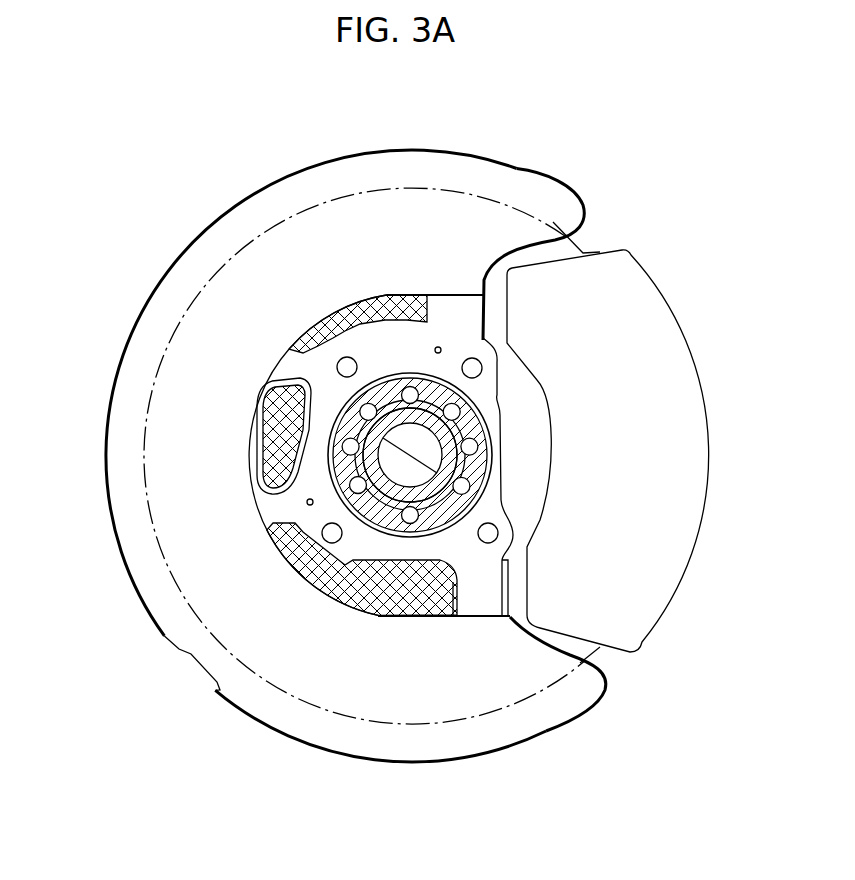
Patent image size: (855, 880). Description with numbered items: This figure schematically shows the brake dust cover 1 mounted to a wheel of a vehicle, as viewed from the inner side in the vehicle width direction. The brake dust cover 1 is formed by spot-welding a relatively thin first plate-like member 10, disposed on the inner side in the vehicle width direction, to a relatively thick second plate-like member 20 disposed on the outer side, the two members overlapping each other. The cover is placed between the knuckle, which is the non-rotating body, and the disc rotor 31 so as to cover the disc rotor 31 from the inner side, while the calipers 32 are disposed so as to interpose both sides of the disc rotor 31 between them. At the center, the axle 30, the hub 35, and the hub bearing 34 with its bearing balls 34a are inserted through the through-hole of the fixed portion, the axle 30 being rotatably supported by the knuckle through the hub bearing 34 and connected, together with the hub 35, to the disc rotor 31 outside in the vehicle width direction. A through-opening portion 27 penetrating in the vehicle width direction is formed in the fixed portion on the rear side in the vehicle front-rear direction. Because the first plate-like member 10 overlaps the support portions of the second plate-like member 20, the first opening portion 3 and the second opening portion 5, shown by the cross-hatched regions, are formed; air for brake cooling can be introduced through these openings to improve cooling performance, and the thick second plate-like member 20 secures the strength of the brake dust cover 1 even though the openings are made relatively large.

The brake dust cover 1 is at (253, 193).
The first opening portion 3 is at (370, 296).
The second opening portion 5 is at (378, 615).
The first plate-like member 10 is at (140, 553).
The second plate-like member 20 is at (288, 367).
The through-opening portion 27 is at (258, 431).
The axle 30 is at (418, 469).
The disc rotor 31 is at (455, 187).
The caliper 32 is at (622, 343).
The hub bearing 34 is at (484, 461).
The bearing ball 34a is at (466, 490).
The hub 35 is at (430, 420).